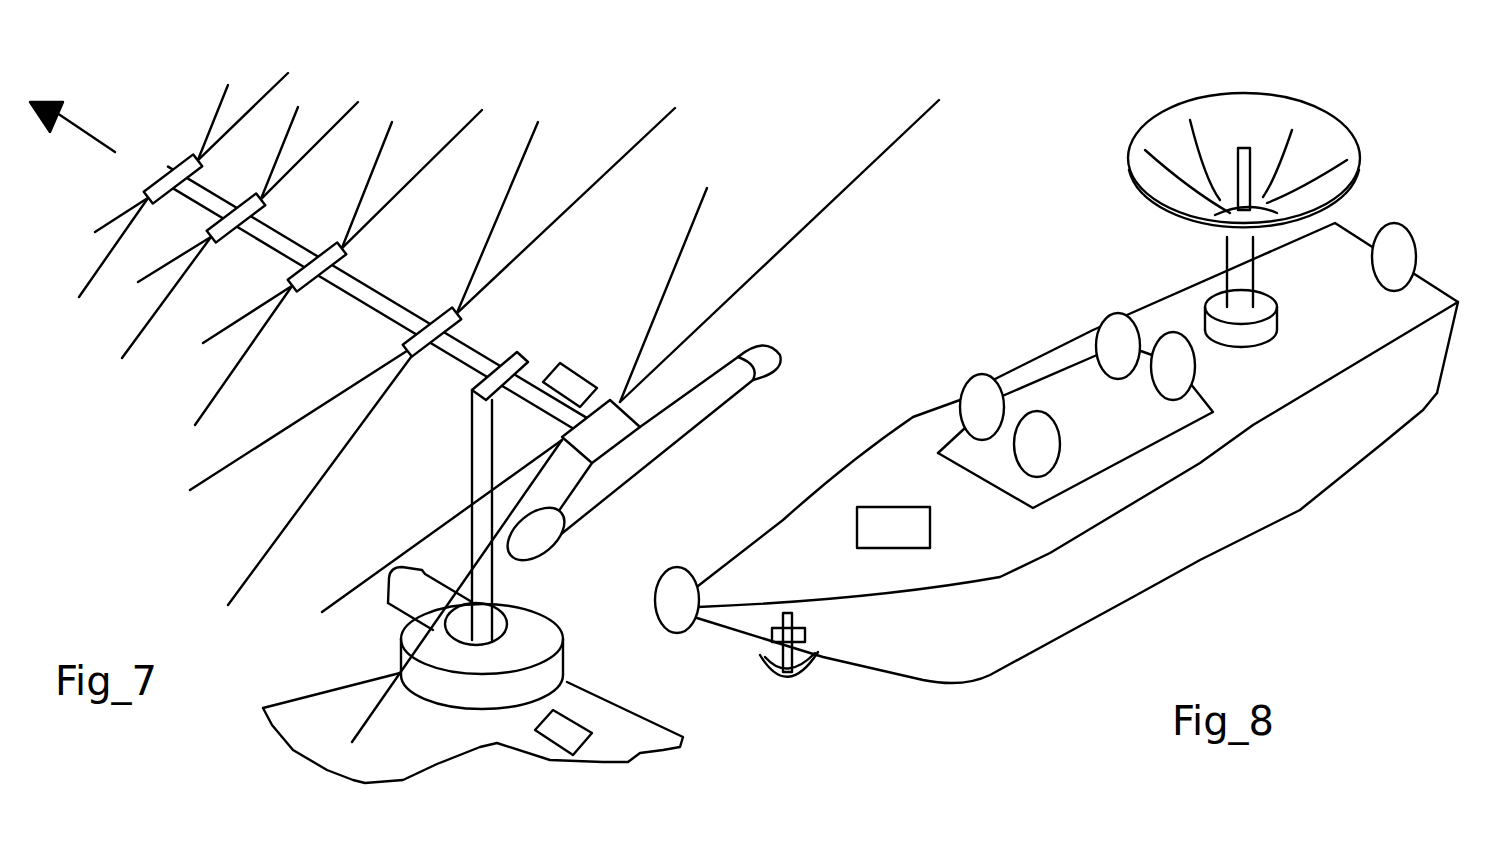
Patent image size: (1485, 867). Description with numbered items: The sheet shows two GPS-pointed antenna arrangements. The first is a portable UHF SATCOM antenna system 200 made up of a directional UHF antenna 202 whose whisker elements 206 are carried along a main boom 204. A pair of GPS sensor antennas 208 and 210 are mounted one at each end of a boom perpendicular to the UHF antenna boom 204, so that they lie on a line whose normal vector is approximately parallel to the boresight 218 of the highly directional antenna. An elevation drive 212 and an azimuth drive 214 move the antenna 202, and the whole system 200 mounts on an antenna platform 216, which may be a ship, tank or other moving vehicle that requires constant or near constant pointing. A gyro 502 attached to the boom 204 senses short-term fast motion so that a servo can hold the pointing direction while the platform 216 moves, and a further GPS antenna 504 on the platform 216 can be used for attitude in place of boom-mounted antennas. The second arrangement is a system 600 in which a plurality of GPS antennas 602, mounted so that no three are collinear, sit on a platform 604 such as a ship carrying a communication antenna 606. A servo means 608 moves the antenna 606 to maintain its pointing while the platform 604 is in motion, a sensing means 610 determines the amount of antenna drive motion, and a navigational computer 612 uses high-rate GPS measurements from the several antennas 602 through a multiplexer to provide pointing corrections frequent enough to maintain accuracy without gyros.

In FIG. 7, the portable UHF SATCOM antenna system 200 is at (202, 753).
In FIG. 7, the directional UHF antenna 202 is at (353, 327).
In FIG. 7, the main boom 204 is at (372, 280).
In FIG. 7, the whisker elements 206 is at (286, 72).
In FIG. 7, the GPS sensor antenna 208 is at (565, 545).
In FIG. 7, the GPS sensor antenna 210 is at (775, 343).
In FIG. 7, the elevation drive 212 is at (543, 613).
In FIG. 7, the azimuth drive 214 is at (393, 603).
In FIG. 7, the antenna platform 216 is at (617, 707).
In FIG. 7, the boresight 218 is at (78, 125).
In FIG. 7, the gyro 502 is at (590, 368).
In FIG. 7, the GPS antenna 504 is at (575, 745).
In FIG. 8, the system 600 is at (985, 712).
In FIG. 8, the GPS antennas 602 is at (675, 566).
In FIG. 8, the platform 604 is at (910, 423).
In FIG. 8, the communication antenna 606 is at (1127, 209).
In FIG. 8, the servo means 608 is at (1283, 318).
In FIG. 8, the sensing means 610 is at (1267, 300).
In FIG. 8, the navigational computer 612 is at (927, 508).